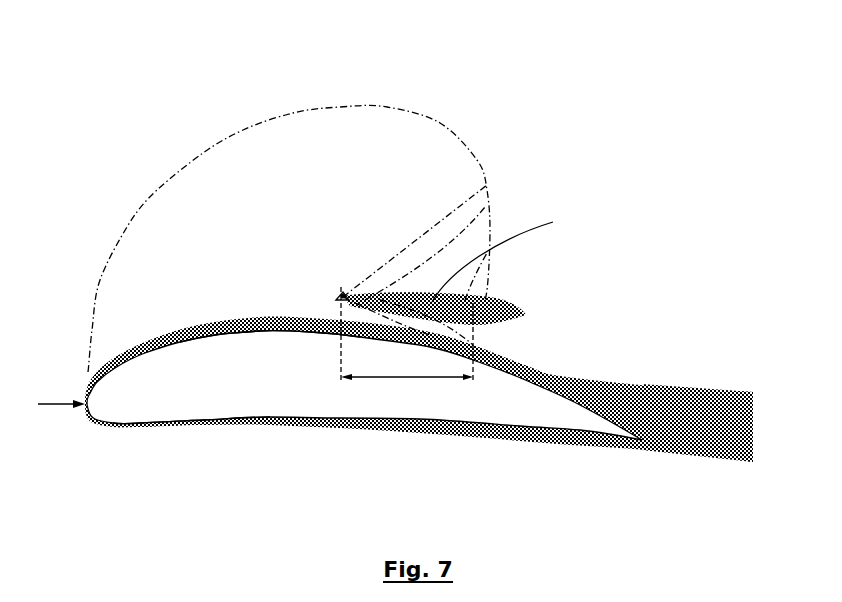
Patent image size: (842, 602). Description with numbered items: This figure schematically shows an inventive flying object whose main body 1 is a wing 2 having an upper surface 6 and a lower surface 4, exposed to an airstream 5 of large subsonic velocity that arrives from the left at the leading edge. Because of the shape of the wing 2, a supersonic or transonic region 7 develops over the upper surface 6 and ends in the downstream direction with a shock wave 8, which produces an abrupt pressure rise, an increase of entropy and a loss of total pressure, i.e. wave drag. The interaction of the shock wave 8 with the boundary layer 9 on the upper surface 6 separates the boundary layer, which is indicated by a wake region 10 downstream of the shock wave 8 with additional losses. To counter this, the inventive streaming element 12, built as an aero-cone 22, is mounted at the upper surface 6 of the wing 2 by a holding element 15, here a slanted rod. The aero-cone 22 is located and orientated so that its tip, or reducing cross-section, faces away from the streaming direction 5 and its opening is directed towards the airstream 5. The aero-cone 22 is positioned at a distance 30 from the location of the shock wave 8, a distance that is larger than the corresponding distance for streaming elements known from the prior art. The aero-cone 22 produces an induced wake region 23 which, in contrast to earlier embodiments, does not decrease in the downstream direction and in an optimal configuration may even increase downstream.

The main body 1 is at (419, 413).
The wing 2 is at (306, 390).
The lower surface 4 is at (190, 421).
The airstream 5 is at (58, 405).
The upper surface 6 is at (213, 335).
The supersonic or transonic region 7 is at (300, 160).
The shock wave 8 is at (487, 277).
The boundary layer 9 is at (275, 333).
The wake region 10 is at (690, 409).
The streaming element 12 is at (346, 267).
The holding element 15 is at (317, 319).
The aero-cone 22 is at (341, 292).
The induced wake region 23 is at (504, 257).
The distance 30 is at (407, 333).